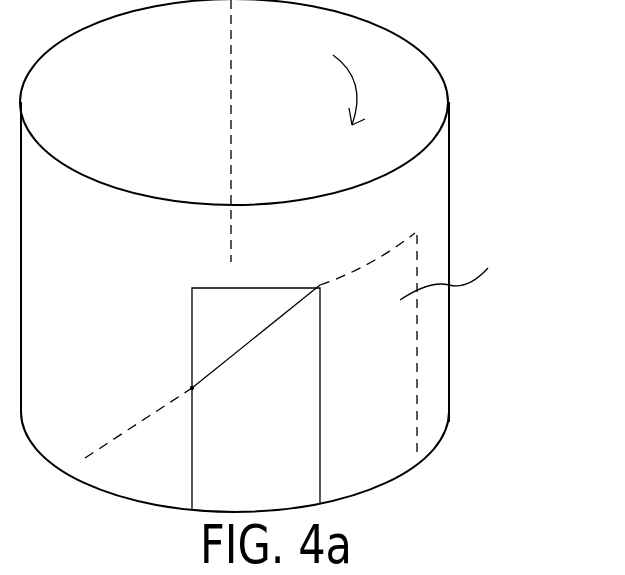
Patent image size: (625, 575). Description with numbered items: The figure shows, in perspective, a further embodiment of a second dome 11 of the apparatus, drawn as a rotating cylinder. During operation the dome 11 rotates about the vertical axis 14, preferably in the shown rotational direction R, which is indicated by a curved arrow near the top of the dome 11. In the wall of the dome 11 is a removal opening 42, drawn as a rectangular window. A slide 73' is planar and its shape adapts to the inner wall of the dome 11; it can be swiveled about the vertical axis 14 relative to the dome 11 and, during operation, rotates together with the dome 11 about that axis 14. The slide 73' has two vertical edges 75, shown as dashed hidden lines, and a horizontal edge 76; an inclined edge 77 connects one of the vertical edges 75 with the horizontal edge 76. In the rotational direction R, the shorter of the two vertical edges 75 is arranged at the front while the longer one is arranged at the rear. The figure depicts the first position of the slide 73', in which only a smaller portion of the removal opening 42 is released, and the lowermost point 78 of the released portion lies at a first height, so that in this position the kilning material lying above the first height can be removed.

The dome 11 is at (449, 185).
The vertical axis 14 is at (254, 131).
The rotational direction R is at (363, 90).
The removal opening 42 is at (210, 325).
The slide 73' is at (473, 273).
The vertical edges 75 is at (416, 345).
The horizontal edge 76 is at (388, 257).
The inclined edge 77 is at (240, 355).
The lowermost point 78 is at (192, 388).